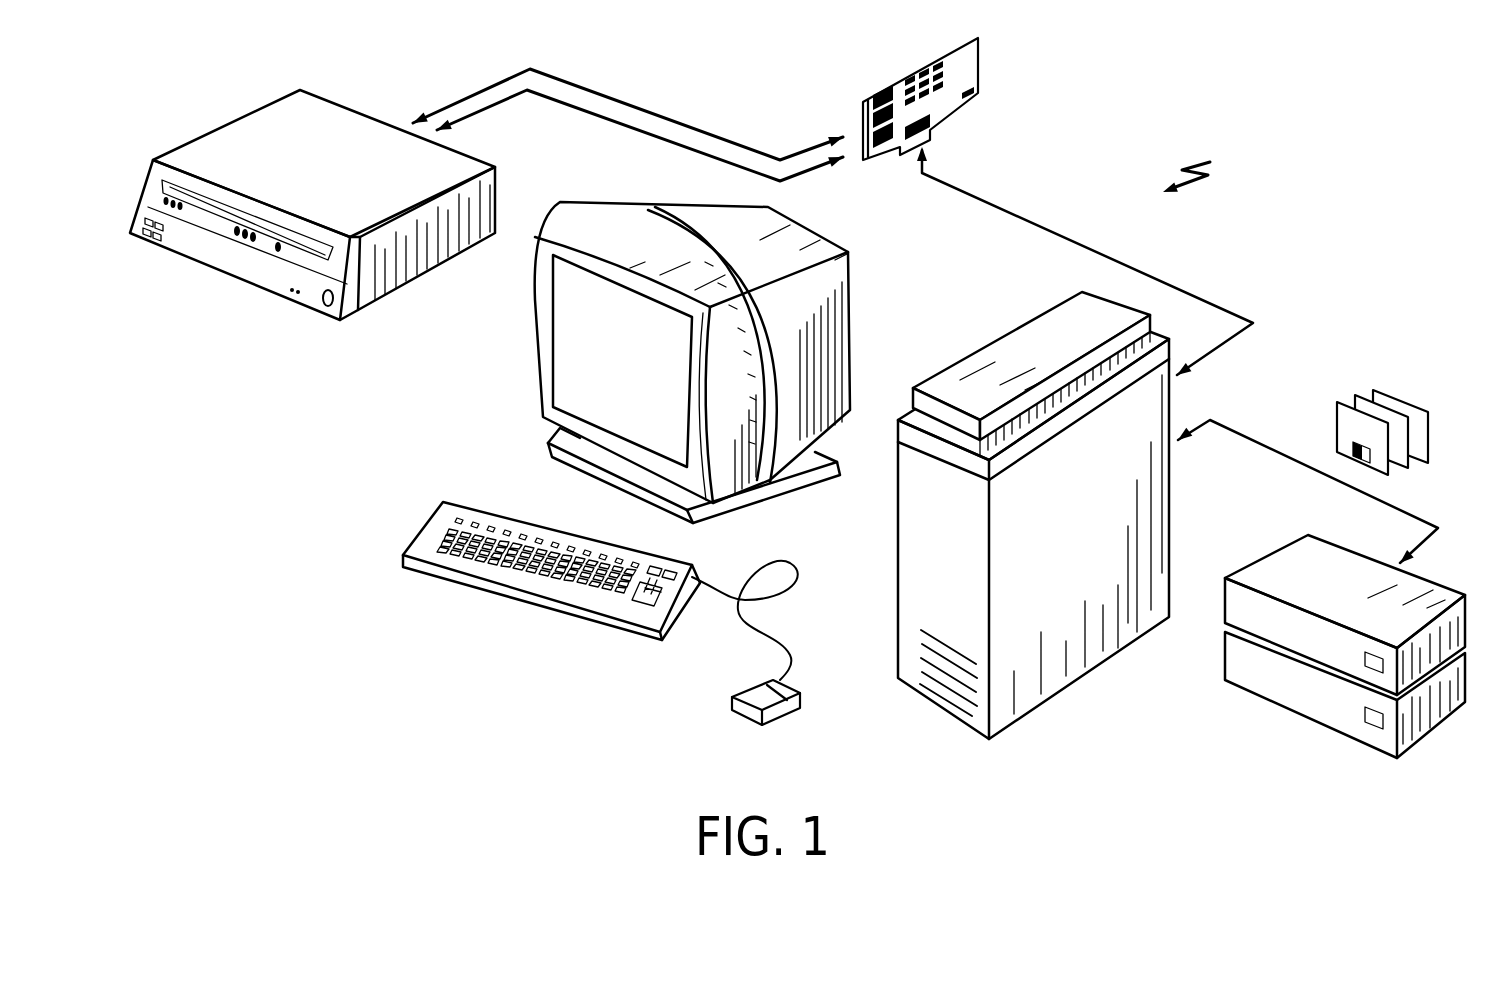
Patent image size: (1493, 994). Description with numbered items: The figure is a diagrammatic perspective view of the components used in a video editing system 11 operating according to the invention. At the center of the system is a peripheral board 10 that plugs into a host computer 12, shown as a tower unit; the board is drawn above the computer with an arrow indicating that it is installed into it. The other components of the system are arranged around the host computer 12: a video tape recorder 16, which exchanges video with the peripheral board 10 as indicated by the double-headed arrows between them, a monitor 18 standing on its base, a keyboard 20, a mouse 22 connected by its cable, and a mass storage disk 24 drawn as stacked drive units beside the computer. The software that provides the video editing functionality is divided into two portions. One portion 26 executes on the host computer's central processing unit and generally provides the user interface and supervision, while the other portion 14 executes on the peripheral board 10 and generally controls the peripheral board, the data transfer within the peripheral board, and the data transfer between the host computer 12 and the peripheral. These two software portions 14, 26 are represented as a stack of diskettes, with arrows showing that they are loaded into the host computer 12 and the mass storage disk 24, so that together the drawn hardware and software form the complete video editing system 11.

The peripheral board 10 is at (965, 57).
The video editing system 11 is at (1210, 161).
The host computer 12 is at (1108, 582).
The software portion 14 is at (1345, 402).
The video tape recorder 16 is at (351, 192).
The monitor 18 is at (634, 391).
The keyboard 20 is at (487, 591).
The mouse 22 is at (800, 700).
The mass storage disk 24 is at (1359, 601).
The software portion 26 is at (1355, 393).